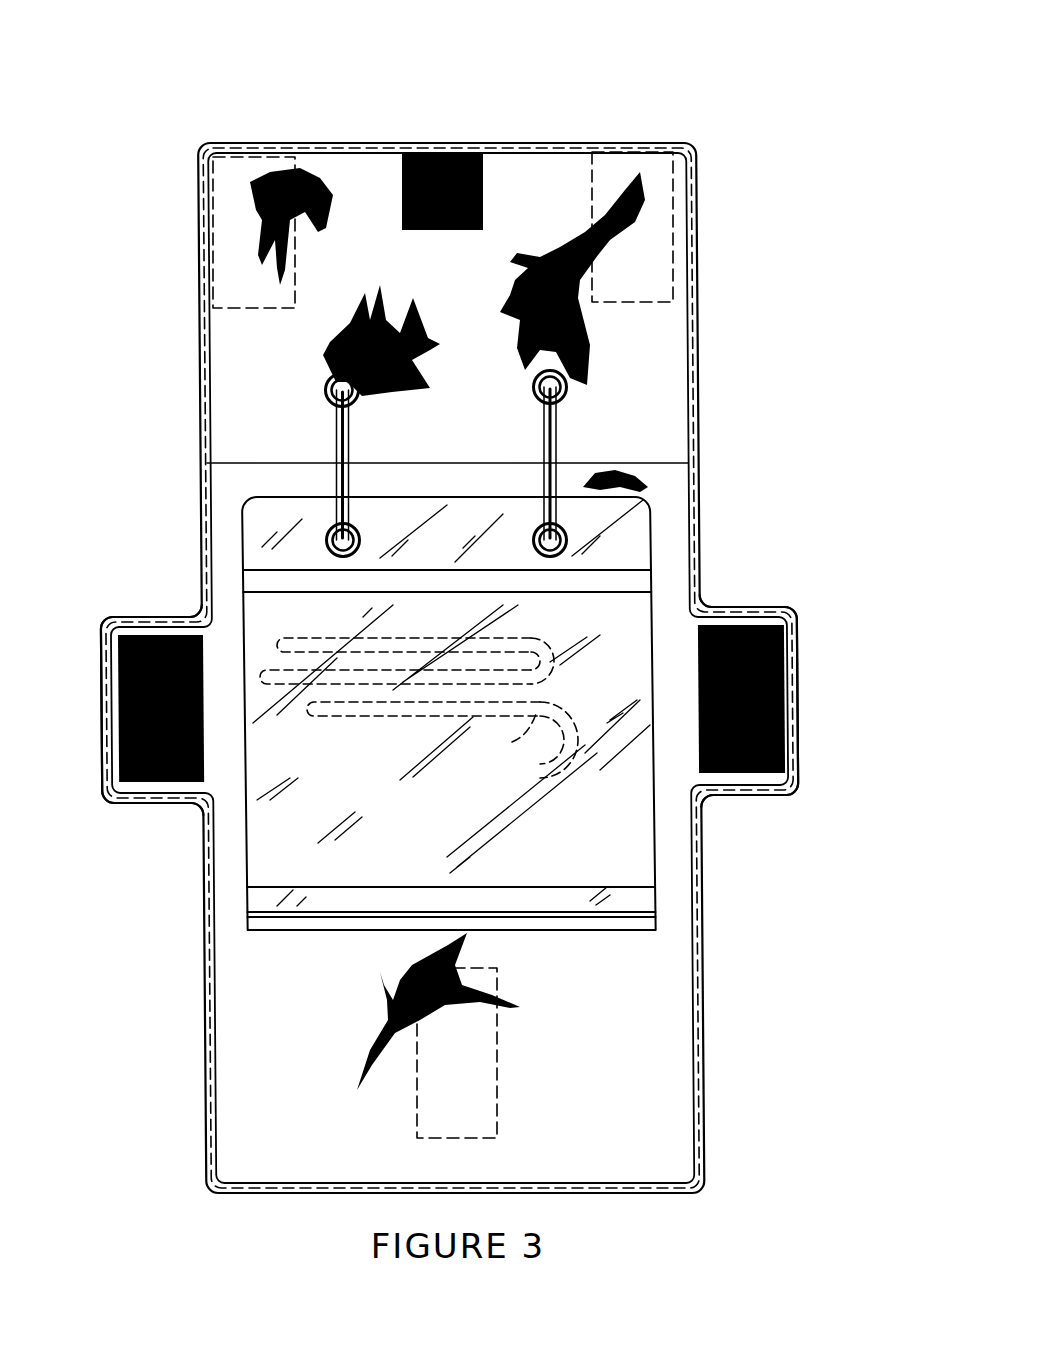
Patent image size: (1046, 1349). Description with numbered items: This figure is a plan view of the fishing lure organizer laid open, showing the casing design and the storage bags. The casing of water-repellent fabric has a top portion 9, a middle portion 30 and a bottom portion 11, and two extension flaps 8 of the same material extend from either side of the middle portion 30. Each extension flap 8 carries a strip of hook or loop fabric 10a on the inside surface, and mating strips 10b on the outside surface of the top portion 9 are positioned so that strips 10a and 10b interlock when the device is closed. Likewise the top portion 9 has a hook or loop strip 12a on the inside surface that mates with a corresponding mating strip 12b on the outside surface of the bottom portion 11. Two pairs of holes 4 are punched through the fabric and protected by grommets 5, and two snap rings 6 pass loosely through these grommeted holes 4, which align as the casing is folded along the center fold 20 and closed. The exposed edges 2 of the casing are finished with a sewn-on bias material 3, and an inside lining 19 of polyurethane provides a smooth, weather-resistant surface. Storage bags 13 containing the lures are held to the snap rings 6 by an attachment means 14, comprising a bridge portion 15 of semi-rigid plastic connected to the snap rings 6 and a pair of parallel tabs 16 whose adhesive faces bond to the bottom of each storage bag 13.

The exposed edges 2 is at (753, 978).
The bias material 3 is at (697, 920).
The holes 4 is at (337, 385).
The grommets 5 is at (330, 540).
The snap rings 6 is at (557, 442).
The extension flaps 8 is at (105, 665).
The top portion 9 is at (522, 192).
The strip of hook or loop fabric 10a is at (120, 725).
The mating strips 10b is at (240, 228).
The bottom portion 11 is at (258, 1050).
The hook or loop strip 12a is at (447, 153).
The mating strip 12b is at (457, 1118).
The storage bags 13 is at (287, 875).
The attachment means 14 is at (607, 540).
The bridge portion 15 is at (478, 510).
The tabs 16 is at (607, 573).
The inside lining 19 is at (652, 1145).
The center fold 20 is at (303, 462).
The middle portion 30 is at (228, 843).